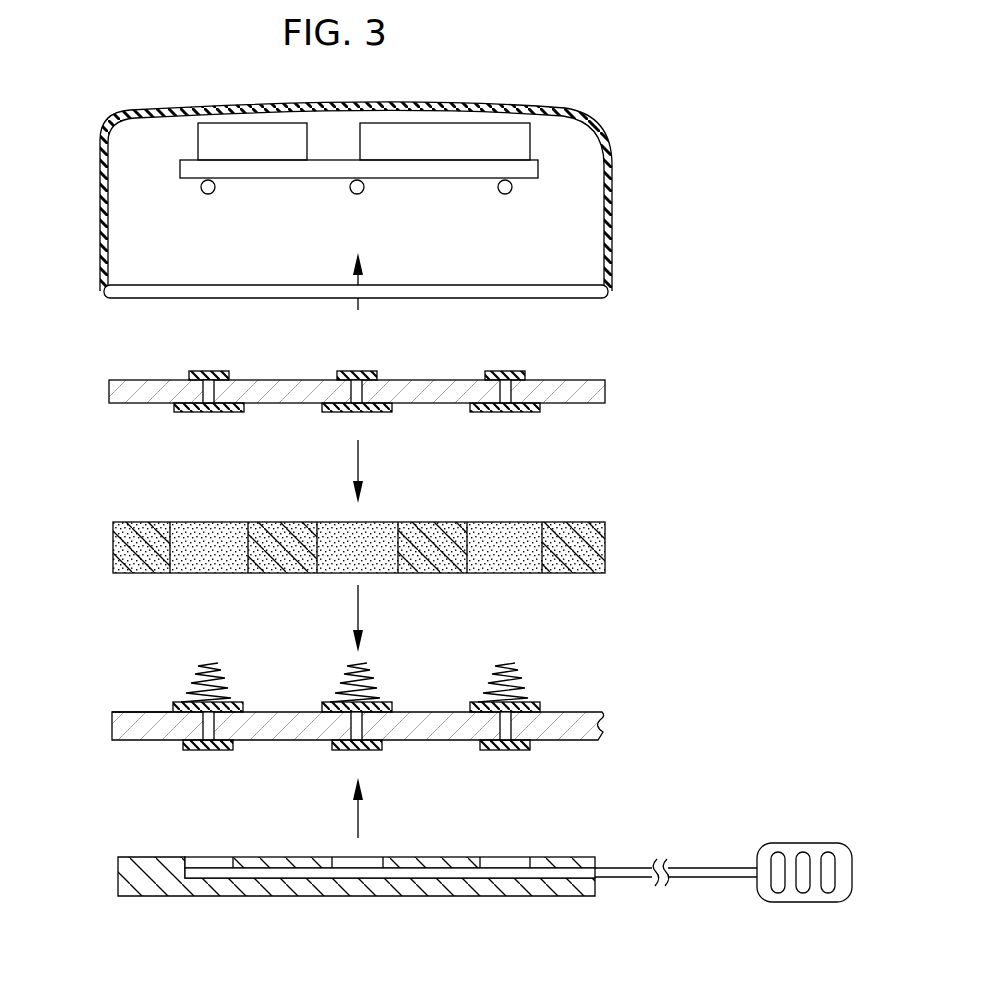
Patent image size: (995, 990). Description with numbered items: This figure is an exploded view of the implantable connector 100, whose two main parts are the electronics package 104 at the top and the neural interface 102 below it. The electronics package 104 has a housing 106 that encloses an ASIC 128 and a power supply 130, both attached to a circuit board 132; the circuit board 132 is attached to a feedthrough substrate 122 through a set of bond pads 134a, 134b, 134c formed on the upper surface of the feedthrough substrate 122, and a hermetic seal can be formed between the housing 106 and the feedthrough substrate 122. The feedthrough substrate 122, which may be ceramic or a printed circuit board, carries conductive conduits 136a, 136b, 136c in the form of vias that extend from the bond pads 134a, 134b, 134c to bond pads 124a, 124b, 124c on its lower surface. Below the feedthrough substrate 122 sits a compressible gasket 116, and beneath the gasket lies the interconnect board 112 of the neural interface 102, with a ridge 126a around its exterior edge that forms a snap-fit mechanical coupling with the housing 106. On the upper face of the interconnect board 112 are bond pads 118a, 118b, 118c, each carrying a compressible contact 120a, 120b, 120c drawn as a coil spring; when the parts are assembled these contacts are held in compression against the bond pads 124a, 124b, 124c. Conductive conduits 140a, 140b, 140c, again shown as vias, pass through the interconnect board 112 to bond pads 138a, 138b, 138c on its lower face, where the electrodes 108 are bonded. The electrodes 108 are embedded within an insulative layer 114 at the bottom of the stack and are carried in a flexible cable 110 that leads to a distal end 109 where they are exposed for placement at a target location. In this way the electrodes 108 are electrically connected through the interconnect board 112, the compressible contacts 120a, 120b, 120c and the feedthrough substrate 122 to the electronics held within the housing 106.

The implantable connector 100 is at (565, 65).
The neural interface 102 is at (638, 700).
The electronics package 104 is at (640, 300).
The housing 106 is at (100, 237).
The electrodes 108 is at (500, 889).
The distal end 109 is at (790, 843).
The flexible cable 110 is at (683, 878).
The interconnect board 112 is at (115, 728).
The insulative layer 114 is at (165, 897).
The compressible gasket 116 is at (113, 560).
The bond pad 118a is at (173, 707).
The bond pad 118b is at (321, 707).
The bond pad 118c is at (469, 707).
The compressible contact 120a is at (200, 682).
The compressible contact 120b is at (348, 682).
The compressible contact 120c is at (496, 682).
The feedthrough substrate 122 is at (109, 393).
The bond pad 124a is at (195, 412).
The bond pad 124b is at (343, 412).
The bond pad 124c is at (491, 412).
The ridge 126a is at (112, 715).
The ASIC 128 is at (462, 155).
The power supply 130 is at (269, 155).
The circuit board 132 is at (180, 168).
The bond pad 134a is at (207, 371).
The bond pad 134b is at (355, 371).
The bond pad 134c is at (503, 371).
The conductive conduit 136a is at (205, 391).
The conductive conduit 136b is at (353, 391).
The conductive conduit 136c is at (501, 391).
The bond pad 138a is at (205, 752).
The bond pad 138b is at (353, 752).
The bond pad 138c is at (501, 752).
The conductive conduit 140a is at (205, 726).
The conductive conduit 140b is at (353, 726).
The conductive conduit 140c is at (501, 726).